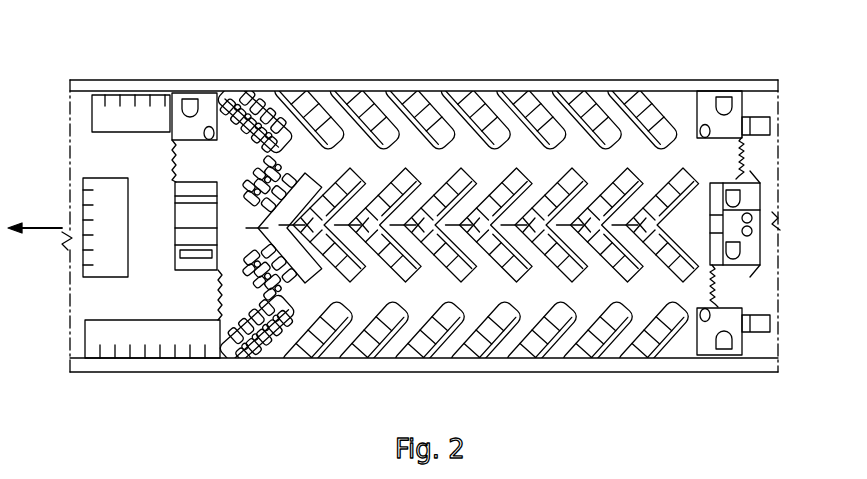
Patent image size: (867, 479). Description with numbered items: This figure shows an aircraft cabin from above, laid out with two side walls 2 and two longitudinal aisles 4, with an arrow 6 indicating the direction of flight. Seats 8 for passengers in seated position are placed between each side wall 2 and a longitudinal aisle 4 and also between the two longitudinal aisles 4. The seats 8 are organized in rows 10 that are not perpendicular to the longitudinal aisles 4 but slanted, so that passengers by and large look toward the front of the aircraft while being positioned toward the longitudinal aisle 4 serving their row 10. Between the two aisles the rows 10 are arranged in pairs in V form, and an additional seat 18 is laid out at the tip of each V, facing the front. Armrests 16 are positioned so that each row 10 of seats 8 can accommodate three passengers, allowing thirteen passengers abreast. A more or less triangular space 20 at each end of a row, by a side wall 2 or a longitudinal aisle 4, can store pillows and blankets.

The side wall 2 is at (686, 80).
The longitudinal aisle 4 is at (706, 148).
The arrow 6 is at (46, 228).
The seat 8 is at (598, 135).
The row 10 is at (228, 95).
The armrest 16 is at (362, 98).
The additional seat 18 is at (410, 215).
The space 20 is at (397, 93).